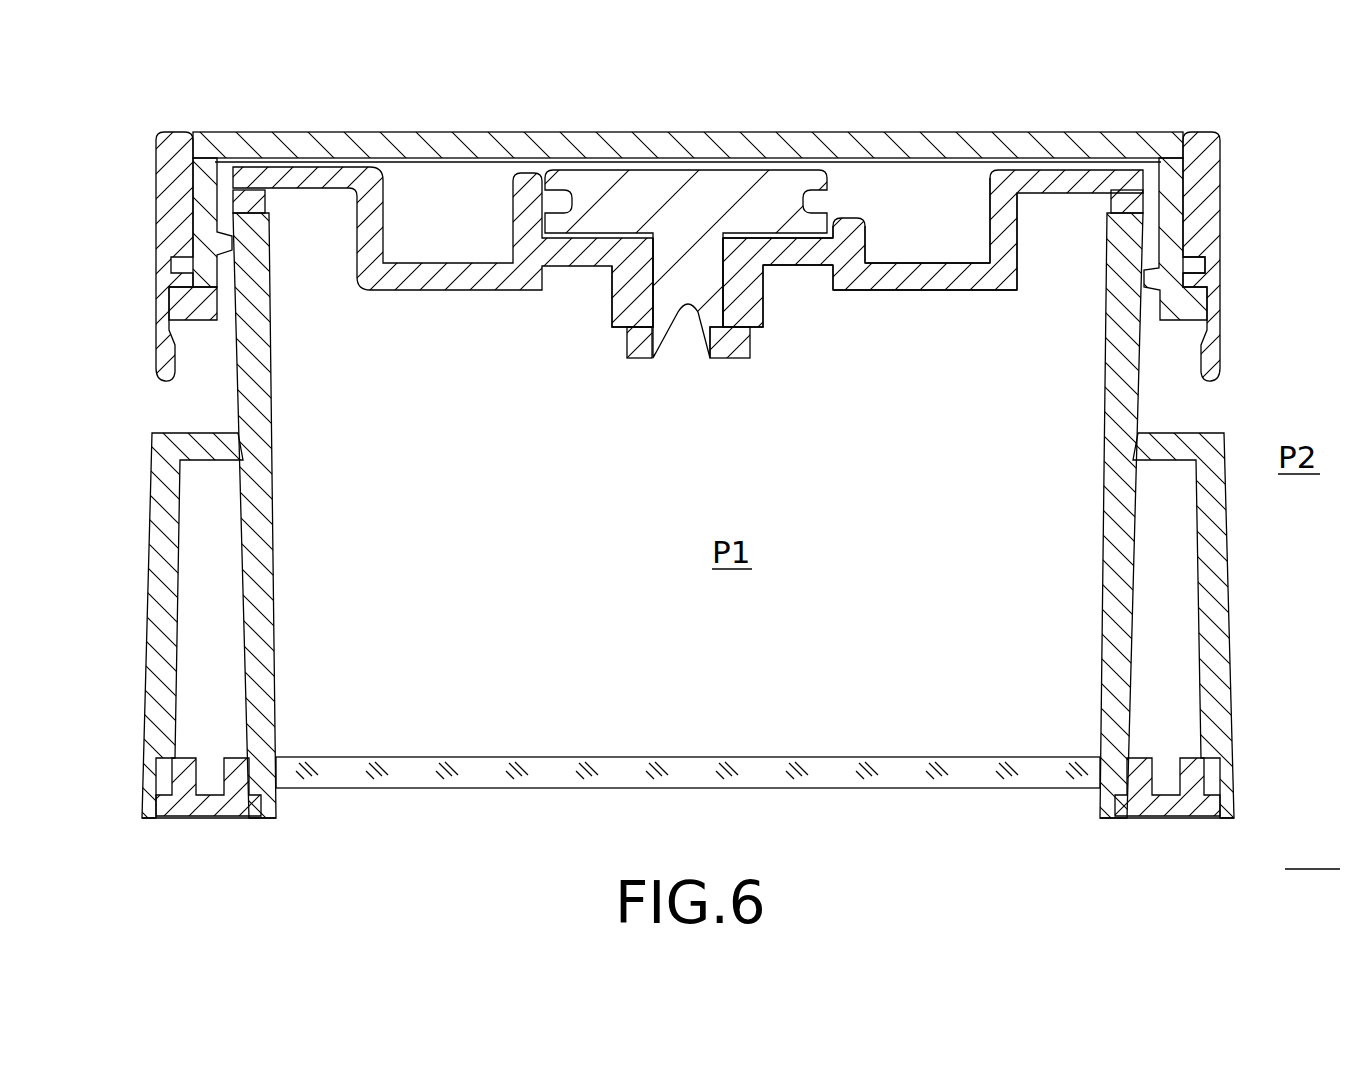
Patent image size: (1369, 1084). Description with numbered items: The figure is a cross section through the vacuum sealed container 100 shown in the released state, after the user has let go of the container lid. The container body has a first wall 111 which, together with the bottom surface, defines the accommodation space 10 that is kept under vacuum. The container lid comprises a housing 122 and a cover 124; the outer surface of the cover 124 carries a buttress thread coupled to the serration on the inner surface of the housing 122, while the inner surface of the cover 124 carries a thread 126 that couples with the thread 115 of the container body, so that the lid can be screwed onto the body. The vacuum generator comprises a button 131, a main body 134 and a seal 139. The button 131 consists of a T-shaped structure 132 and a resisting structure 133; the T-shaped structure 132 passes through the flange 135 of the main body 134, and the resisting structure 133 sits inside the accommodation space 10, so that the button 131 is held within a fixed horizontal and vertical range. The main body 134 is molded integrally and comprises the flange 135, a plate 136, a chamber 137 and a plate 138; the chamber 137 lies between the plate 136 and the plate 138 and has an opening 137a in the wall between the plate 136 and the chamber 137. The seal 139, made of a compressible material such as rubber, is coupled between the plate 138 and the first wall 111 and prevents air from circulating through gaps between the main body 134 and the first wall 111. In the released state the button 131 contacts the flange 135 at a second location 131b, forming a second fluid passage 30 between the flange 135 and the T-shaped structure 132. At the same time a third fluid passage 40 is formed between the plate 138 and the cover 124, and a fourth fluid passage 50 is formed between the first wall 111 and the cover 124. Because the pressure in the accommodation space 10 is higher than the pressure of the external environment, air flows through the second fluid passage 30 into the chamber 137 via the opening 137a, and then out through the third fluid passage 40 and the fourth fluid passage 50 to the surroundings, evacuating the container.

The accommodation space 10 is at (690, 444).
The second fluid passage 30 is at (783, 232).
The third fluid passage 40 is at (290, 160).
The fourth fluid passage 50 is at (222, 228).
The vacuum sealed container 100 is at (1314, 852).
The first wall 111 is at (1120, 397).
The thread 115 is at (166, 216).
The housing 122 is at (160, 170).
The cover 124 is at (427, 153).
The thread 126 is at (217, 263).
The button 131 is at (646, 358).
The second location 131b is at (630, 340).
The T-shaped structure 132 is at (681, 215).
The resisting structure 133 is at (713, 333).
The main body 134 is at (933, 258).
The flange 135 is at (767, 270).
The plate 136 is at (840, 287).
The chamber 137 is at (980, 270).
The opening 137a is at (853, 187).
The plate 138 is at (1077, 192).
The seal 139 is at (1130, 200).